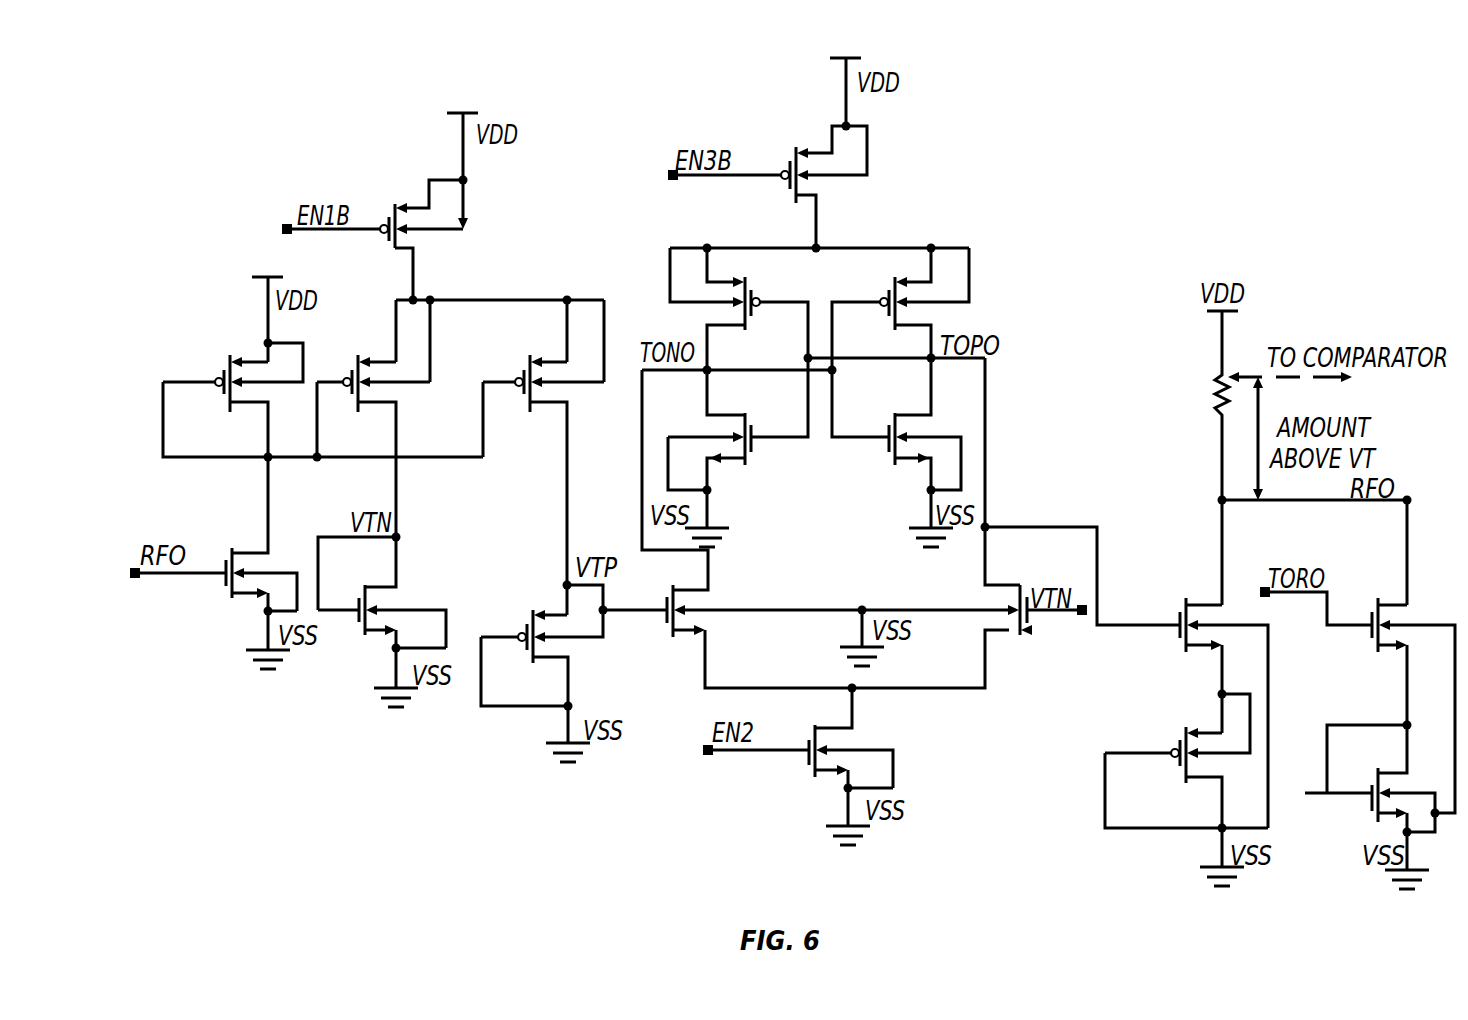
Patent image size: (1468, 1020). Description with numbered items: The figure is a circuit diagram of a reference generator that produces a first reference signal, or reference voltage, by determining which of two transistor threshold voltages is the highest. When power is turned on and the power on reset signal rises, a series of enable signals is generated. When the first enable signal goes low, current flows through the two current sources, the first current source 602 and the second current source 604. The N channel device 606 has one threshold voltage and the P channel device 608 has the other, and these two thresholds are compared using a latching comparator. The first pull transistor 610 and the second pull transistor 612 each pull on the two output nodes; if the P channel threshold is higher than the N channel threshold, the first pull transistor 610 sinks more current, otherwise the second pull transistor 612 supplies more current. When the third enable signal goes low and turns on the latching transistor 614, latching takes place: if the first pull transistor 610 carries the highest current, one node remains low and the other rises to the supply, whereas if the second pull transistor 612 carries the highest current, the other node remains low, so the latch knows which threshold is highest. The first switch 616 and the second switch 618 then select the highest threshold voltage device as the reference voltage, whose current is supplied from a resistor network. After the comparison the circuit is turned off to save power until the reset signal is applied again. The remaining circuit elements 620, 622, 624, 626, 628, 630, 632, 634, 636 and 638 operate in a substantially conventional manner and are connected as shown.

The current source M3 602 is at (358, 355).
The current source M6 604 is at (528, 355).
The N channel device M4 606 is at (368, 590).
The P channel device M7 608 is at (528, 612).
The transistor M13 610 is at (672, 633).
The transistor M14 612 is at (1025, 635).
The transistor M8 614 is at (795, 150).
The switch M16 616 is at (1185, 606).
The switch M17 618 is at (1375, 650).
The circuit element M1 620 is at (228, 355).
The circuit element M2 622 is at (230, 556).
The circuit element M5 624 is at (402, 242).
The circuit element M9 626 is at (752, 292).
The circuit element M10 628 is at (893, 290).
The circuit element M11 630 is at (752, 442).
The circuit element M12 632 is at (893, 463).
The circuit element M15 634 is at (815, 770).
The circuit element M18 636 is at (1183, 730).
The circuit element M19 638 is at (1375, 820).